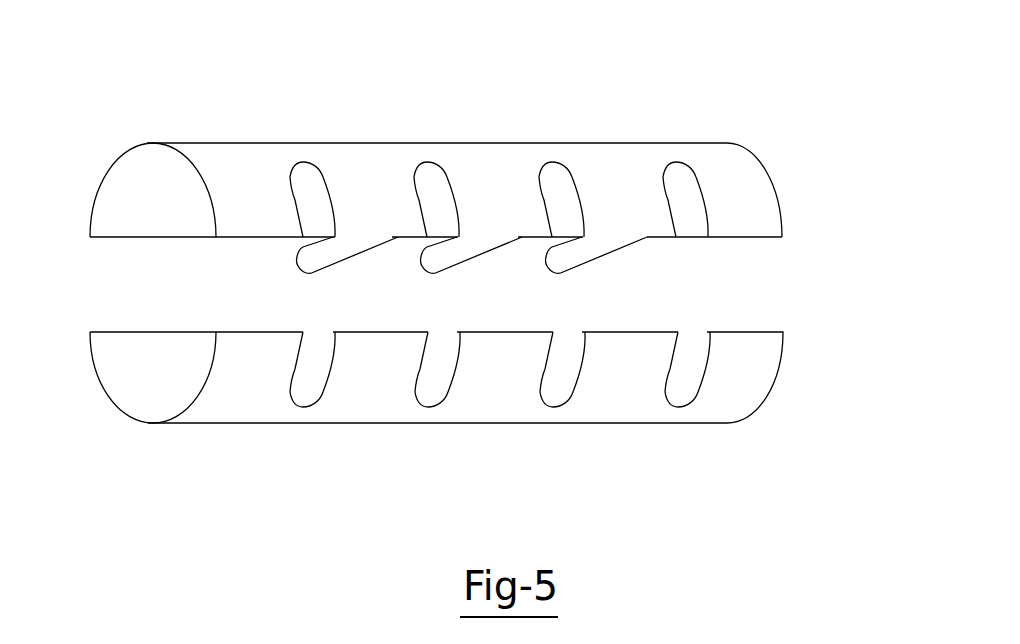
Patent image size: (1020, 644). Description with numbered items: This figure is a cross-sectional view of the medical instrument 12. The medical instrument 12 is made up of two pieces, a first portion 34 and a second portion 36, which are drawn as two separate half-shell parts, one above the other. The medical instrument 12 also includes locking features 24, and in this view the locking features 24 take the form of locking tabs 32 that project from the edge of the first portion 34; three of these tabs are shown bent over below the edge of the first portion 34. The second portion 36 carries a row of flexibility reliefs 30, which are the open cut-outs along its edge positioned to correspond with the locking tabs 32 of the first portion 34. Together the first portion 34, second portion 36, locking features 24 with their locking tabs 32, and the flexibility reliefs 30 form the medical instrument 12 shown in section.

The medical instrument 12 is at (197, 139).
The locking features 24 is at (481, 166).
The locking tabs 32 is at (308, 263).
The flexibility reliefs 30 is at (298, 390).
The first portion 34 is at (228, 152).
The second portion 36 is at (205, 417).